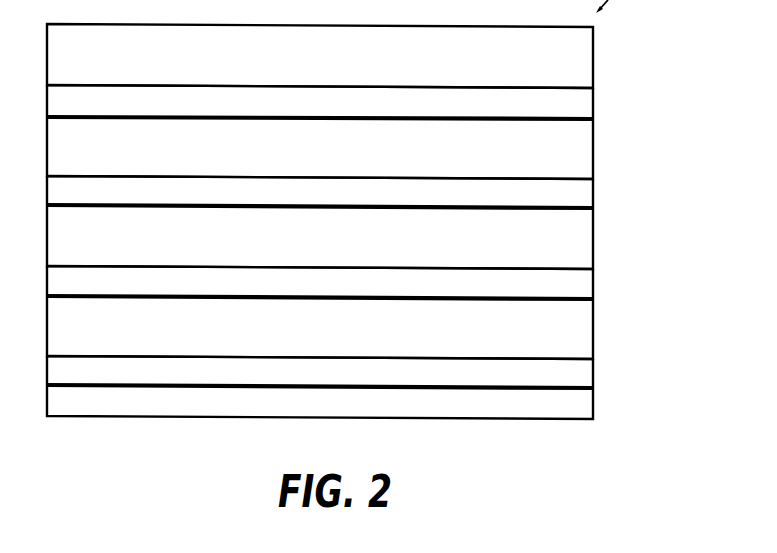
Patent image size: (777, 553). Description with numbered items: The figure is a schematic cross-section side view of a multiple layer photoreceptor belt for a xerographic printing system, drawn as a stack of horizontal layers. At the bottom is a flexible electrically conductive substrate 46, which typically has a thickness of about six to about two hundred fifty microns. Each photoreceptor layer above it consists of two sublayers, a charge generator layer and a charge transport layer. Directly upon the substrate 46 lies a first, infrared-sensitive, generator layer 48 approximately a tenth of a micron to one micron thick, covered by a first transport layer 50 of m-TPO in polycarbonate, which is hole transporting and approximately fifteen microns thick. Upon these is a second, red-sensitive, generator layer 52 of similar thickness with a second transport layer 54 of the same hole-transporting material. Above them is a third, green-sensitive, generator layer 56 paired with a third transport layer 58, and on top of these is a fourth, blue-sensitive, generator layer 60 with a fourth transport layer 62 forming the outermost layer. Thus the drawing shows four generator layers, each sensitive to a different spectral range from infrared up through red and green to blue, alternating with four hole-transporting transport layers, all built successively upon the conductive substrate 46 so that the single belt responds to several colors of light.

The fourth transport layer 62 is at (578, 60).
The fourth, blue-sensitive, generator layer 60 is at (580, 107).
The third transport layer 58 is at (577, 161).
The third, green-sensitive, generator layer 56 is at (573, 201).
The second transport layer 54 is at (575, 253).
The second, red-sensitive, generator layer 52 is at (572, 292).
The first transport layer 50 is at (575, 336).
The first, infrared-sensitive, generator layer 48 is at (565, 376).
The flexible electrically conductive substrate 46 is at (568, 412).